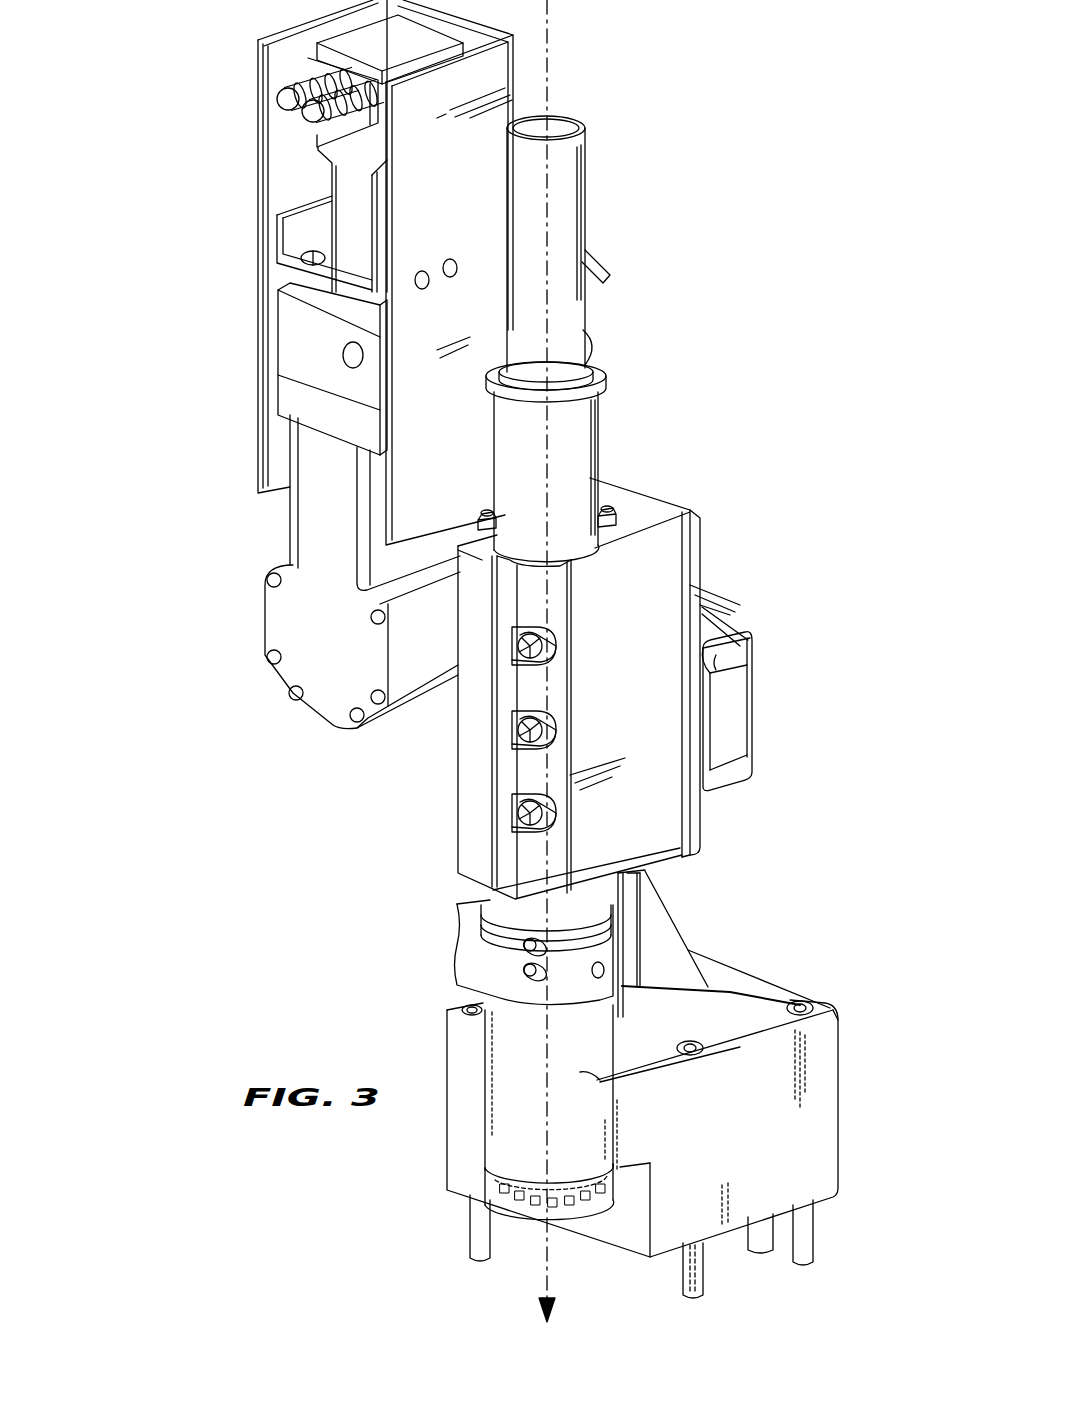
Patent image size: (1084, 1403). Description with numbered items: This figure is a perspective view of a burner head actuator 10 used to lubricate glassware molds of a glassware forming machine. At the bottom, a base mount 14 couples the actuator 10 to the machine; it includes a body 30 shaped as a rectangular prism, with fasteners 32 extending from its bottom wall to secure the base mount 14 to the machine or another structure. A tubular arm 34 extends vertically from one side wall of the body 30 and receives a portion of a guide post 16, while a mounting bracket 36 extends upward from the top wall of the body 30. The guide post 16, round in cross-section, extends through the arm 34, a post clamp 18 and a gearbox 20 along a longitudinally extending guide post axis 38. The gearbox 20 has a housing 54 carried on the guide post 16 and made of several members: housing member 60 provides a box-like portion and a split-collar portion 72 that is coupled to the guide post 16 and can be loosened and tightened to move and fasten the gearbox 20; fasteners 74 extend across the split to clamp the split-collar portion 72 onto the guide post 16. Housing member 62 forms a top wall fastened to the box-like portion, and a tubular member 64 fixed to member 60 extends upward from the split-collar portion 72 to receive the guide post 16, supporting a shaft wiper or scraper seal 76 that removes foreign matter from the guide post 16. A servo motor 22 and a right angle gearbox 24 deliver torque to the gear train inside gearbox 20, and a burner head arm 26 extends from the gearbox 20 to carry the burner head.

The burner head actuator 10 is at (182, 226).
The base mount 14 is at (792, 1128).
The guide post 16 is at (570, 200).
The post clamp 18 is at (586, 940).
The gearbox 20 is at (657, 635).
The servo motor 22 is at (347, 203).
The gearbox 24 is at (322, 637).
The burner head arm 26 is at (732, 715).
The body 30 is at (683, 1208).
The fasteners 32 is at (810, 1232).
The tubular arm 34 is at (515, 1145).
The mounting bracket 36 is at (650, 902).
The guide post axis 38 is at (549, 34).
The housing 54 is at (650, 793).
The housing member 60 is at (639, 686).
The housing member 62 is at (703, 537).
The member 64 is at (577, 452).
The split-collar portion 72 is at (502, 727).
The fasteners 74 is at (530, 813).
The shaft wiper or scraper seal 76 is at (592, 376).